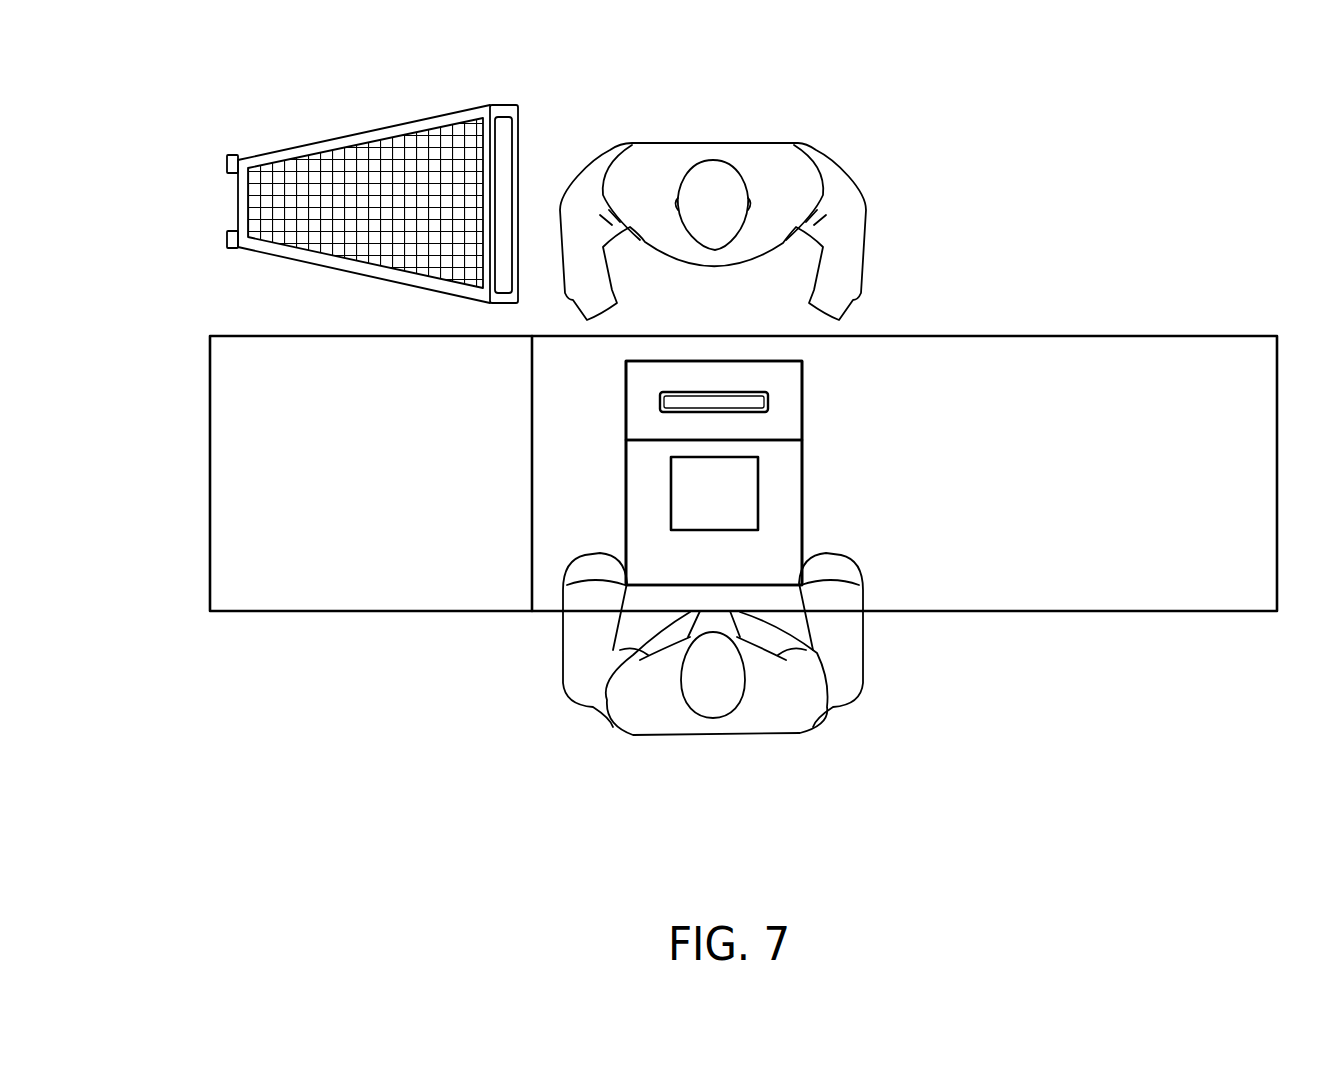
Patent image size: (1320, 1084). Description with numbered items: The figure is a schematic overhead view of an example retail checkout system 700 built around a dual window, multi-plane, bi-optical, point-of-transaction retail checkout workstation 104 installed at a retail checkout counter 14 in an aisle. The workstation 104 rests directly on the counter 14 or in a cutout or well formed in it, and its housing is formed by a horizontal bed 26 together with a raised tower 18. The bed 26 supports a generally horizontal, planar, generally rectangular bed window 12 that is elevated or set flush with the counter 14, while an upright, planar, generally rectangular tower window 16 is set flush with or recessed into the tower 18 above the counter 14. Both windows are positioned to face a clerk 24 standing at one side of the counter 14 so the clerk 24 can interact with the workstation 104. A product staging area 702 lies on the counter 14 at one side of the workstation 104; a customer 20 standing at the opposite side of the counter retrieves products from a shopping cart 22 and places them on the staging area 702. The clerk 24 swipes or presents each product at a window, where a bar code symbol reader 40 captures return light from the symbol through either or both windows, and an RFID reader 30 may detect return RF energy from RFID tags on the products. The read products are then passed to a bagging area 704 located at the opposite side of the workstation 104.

The retail checkout system 700 is at (1045, 74).
The retail checkout counter 14 is at (1208, 348).
The product staging area 702 is at (1003, 348).
The bagging area 704 is at (233, 478).
The shopping cart 22 is at (364, 132).
The customer 20 is at (715, 141).
The clerk 24 is at (562, 668).
The retail checkout workstation 104 is at (855, 467).
The tower 18 is at (717, 362).
The tower window 16 is at (678, 391).
The bar code symbol reader 40 is at (768, 401).
The bed 26 is at (647, 462).
The bed window 12 is at (740, 520).
The RFID reader 30 is at (763, 513).